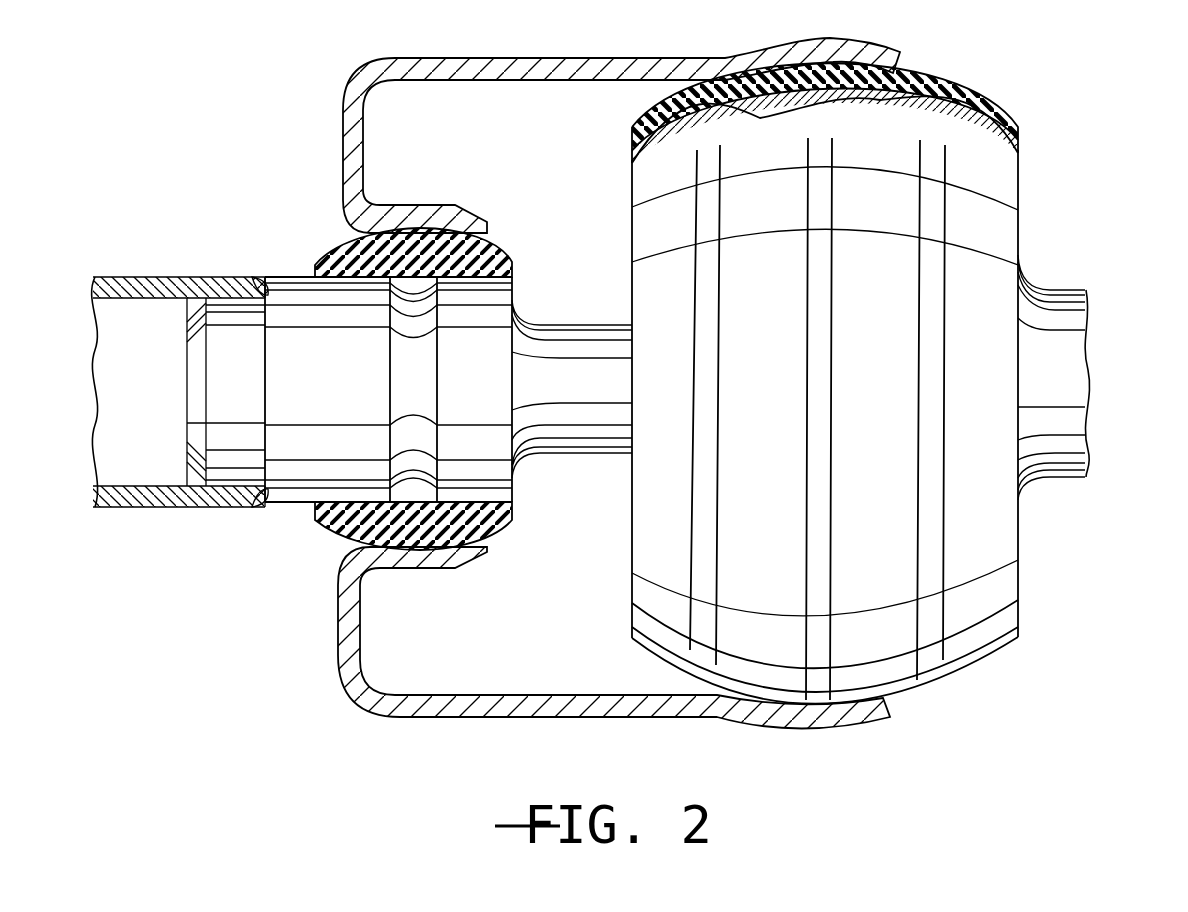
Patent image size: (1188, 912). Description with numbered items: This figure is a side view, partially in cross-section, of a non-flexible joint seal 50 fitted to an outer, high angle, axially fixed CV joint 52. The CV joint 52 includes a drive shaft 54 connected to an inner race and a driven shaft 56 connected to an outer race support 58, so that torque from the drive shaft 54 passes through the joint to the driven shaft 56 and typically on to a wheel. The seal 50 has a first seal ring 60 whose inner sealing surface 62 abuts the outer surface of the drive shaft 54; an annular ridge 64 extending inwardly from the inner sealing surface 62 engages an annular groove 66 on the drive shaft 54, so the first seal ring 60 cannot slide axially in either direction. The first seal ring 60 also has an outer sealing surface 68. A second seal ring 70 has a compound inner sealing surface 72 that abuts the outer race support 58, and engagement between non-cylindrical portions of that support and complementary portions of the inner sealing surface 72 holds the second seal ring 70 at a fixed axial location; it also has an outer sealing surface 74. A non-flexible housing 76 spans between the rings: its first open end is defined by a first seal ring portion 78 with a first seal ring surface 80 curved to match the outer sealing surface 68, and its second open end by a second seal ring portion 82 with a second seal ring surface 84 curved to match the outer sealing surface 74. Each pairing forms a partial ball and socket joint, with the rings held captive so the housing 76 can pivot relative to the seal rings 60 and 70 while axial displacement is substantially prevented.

The non-flexible joint seal 50 is at (336, 727).
The CV joint 52 is at (1073, 660).
The drive shaft 54 is at (287, 276).
The driven shaft 56 is at (1062, 478).
The outer race support 58 is at (1022, 153).
The first seal ring 60 is at (320, 533).
The inner sealing surface 62 is at (295, 505).
The annular ridge 64 is at (400, 500).
The annular groove 66 is at (420, 527).
The outer sealing surface 68 is at (508, 522).
The second seal ring 70 is at (990, 95).
The compound inner sealing surface 72 is at (868, 118).
The outer sealing surface 74 is at (913, 73).
The non-flexible housing 76 is at (460, 722).
The first seal ring portion 78 is at (423, 577).
The first seal ring surface 80 is at (348, 500).
The second seal ring portion 82 is at (818, 733).
The second seal ring surface 84 is at (782, 107).